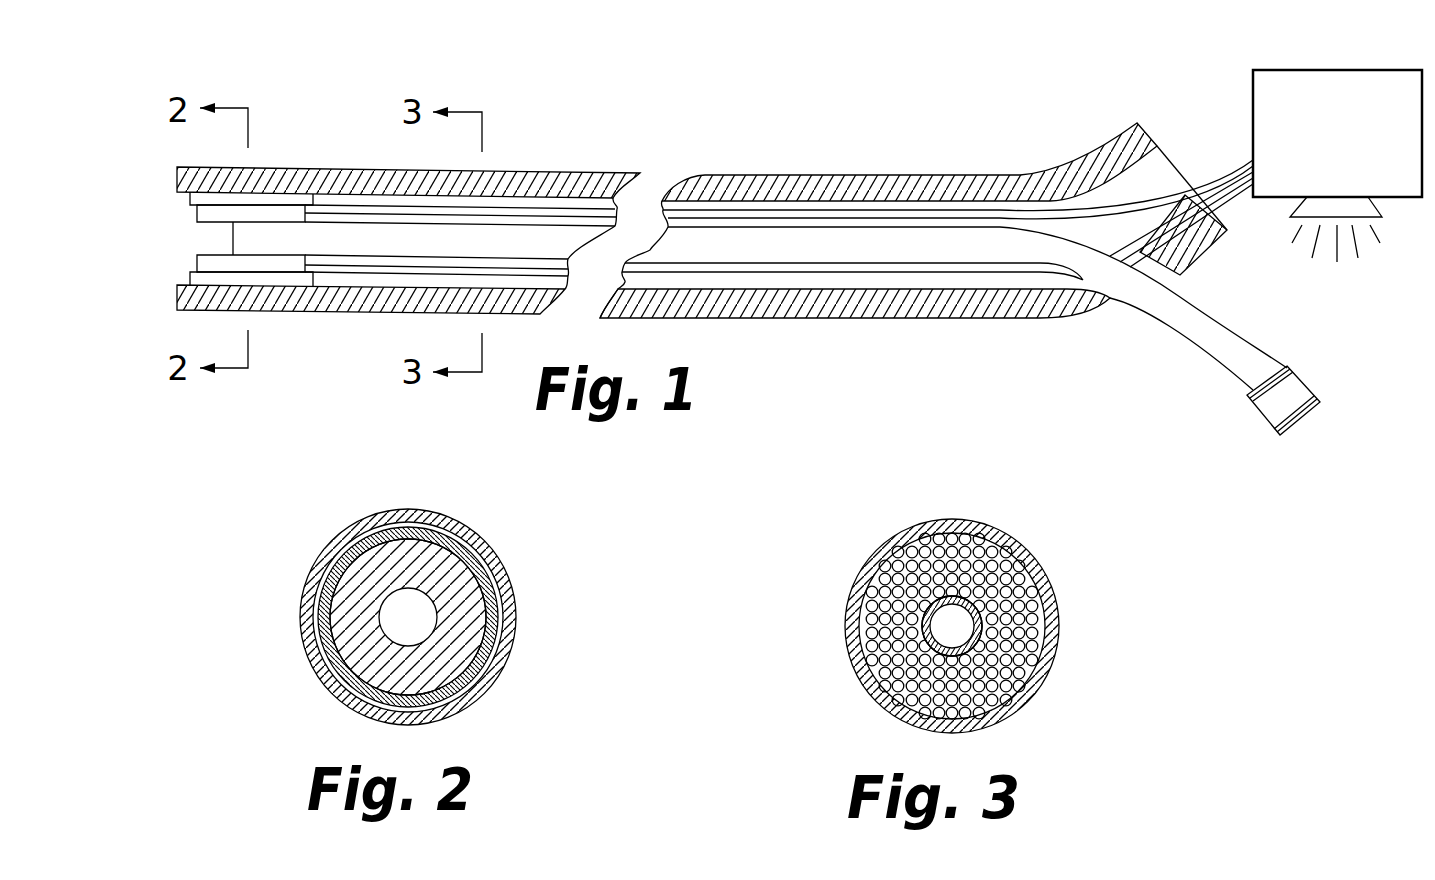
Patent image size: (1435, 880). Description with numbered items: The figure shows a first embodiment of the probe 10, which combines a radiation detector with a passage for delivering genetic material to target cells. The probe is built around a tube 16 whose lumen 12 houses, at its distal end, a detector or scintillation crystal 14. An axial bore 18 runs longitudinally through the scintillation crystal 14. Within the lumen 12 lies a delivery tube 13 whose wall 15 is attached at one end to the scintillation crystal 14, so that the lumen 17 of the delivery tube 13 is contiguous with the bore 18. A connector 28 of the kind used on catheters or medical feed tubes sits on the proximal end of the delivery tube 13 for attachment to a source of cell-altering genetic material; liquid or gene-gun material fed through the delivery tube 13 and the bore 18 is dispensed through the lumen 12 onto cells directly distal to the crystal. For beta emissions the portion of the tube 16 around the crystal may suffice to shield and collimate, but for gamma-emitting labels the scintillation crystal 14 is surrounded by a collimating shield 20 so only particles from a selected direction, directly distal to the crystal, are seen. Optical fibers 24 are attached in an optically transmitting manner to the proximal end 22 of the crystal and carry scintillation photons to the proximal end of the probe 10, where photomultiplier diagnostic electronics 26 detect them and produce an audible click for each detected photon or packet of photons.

In FIG. 1, the probe 10 is at (795, 333).
In FIG. 1, the lumen 12 is at (708, 207).
In FIG. 1, the delivery tube 13 is at (1192, 337).
In FIG. 3, the delivery tube 13 is at (880, 652).
In FIG. 1, the scintillation crystal 14 is at (210, 212).
In FIG. 2, the scintillation crystal 14 is at (443, 650).
In FIG. 3, the wall 15 is at (923, 607).
In FIG. 1, the tube 16 is at (335, 297).
In FIG. 2, the tube 16 is at (470, 540).
In FIG. 3, the tube 16 is at (996, 532).
In FIG. 1, the lumen 17 is at (785, 252).
In FIG. 3, the lumen 17 is at (950, 626).
In FIG. 1, the axial bore 18 is at (193, 236).
In FIG. 2, the axial bore 18 is at (400, 622).
In FIG. 1, the collimating shield 20 is at (193, 278).
In FIG. 2, the collimating shield 20 is at (507, 585).
In FIG. 1, the proximal end 22 is at (318, 205).
In FIG. 1, the optical fibers 24 is at (1030, 213).
In FIG. 3, the optical fibers 24 is at (1000, 578).
In FIG. 1, the photomultiplier diagnostic electronics 26 is at (1263, 92).
In FIG. 1, the connector 28 is at (1290, 410).